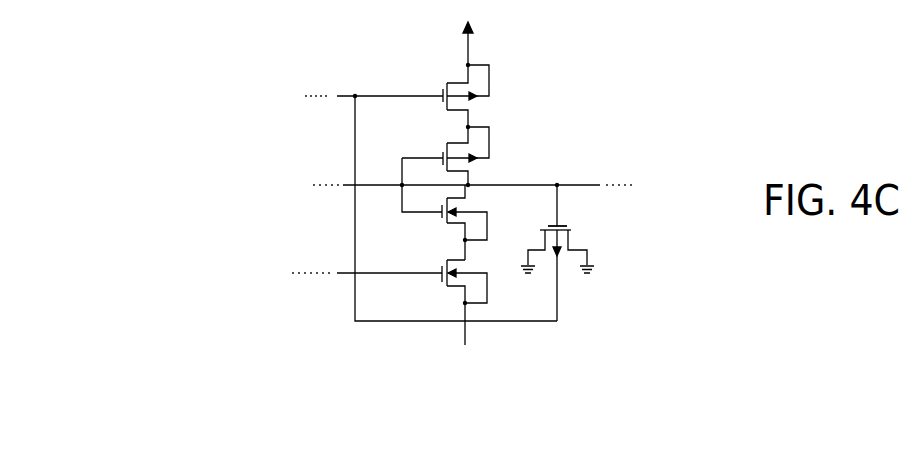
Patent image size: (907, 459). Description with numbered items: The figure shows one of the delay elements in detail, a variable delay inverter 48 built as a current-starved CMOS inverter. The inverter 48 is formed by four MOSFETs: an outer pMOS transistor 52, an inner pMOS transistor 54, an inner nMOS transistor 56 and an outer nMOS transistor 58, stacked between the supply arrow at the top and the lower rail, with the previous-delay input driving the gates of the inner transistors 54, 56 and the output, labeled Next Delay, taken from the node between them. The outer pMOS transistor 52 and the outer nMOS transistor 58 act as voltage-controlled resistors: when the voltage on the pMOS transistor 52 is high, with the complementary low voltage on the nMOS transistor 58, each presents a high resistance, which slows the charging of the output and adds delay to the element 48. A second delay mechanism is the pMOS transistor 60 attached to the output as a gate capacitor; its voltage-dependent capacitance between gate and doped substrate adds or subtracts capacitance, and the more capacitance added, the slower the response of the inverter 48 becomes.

The variable delay inverter 48 is at (207, 280).
The outer pMOS transistor 52 is at (459, 95).
The pMOS transistor 54 is at (459, 155).
The nMOS transistor 56 is at (455, 222).
The outer nMOS transistor 58 is at (455, 302).
The pMOS transistor acting as gate capacitor 60 is at (604, 243).